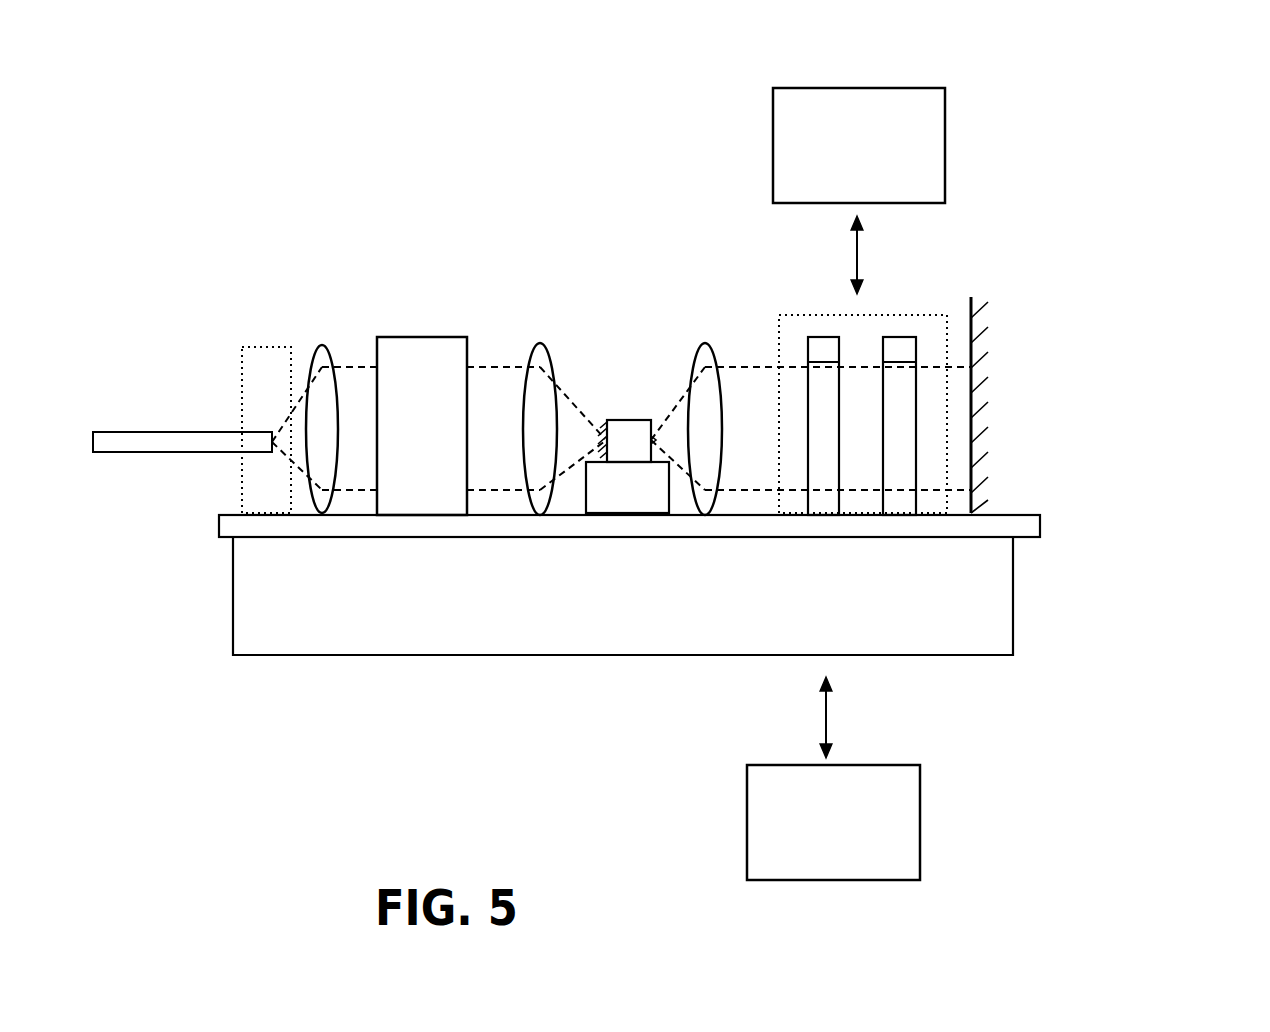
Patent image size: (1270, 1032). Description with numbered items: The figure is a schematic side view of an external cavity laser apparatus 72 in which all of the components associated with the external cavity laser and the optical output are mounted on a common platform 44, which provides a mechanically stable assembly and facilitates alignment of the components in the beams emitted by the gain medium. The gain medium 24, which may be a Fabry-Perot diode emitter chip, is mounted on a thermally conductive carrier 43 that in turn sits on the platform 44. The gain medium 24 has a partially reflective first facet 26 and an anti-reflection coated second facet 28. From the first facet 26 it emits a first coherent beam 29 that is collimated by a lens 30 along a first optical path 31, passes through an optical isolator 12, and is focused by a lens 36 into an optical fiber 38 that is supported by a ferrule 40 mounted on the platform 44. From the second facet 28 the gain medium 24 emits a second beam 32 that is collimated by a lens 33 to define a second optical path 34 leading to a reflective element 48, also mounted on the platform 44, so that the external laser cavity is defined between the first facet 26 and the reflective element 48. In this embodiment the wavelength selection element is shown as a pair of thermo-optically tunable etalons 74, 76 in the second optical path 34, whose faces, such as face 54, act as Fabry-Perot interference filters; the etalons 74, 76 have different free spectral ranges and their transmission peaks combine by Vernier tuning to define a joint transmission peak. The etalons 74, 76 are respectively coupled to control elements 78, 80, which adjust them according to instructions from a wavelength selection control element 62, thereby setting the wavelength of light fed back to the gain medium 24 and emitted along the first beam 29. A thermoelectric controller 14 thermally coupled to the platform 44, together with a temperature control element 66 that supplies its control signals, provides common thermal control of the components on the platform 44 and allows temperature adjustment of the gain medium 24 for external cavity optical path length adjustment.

The optical isolator 12 is at (418, 346).
The thermoelectric controller 14 is at (1003, 620).
The gain medium 24 is at (627, 420).
The first facet 26 is at (603, 426).
The second facet 28 is at (655, 433).
The first coherent beam 29 is at (510, 376).
The lens 30 is at (540, 346).
The first optical path 31 is at (362, 375).
The second beam 32 is at (737, 477).
The lens 33 is at (705, 346).
The second optical path 34 is at (733, 381).
The lens 36 is at (325, 346).
The optical fiber 38 is at (152, 442).
The ferrule 40 is at (245, 363).
The thermally conductive carrier 43 is at (622, 487).
The platform 44 is at (1030, 524).
The reflective element 48 is at (978, 301).
The face 54 is at (865, 329).
The wavelength selection control element 62 is at (945, 133).
The temperature control element 66 is at (920, 812).
The external cavity laser apparatus 72 is at (1128, 196).
The thermo-optically tunable etalon 74 is at (827, 515).
The thermo-optically tunable etalon 76 is at (905, 515).
The control element 78 is at (818, 346).
The control element 80 is at (900, 346).